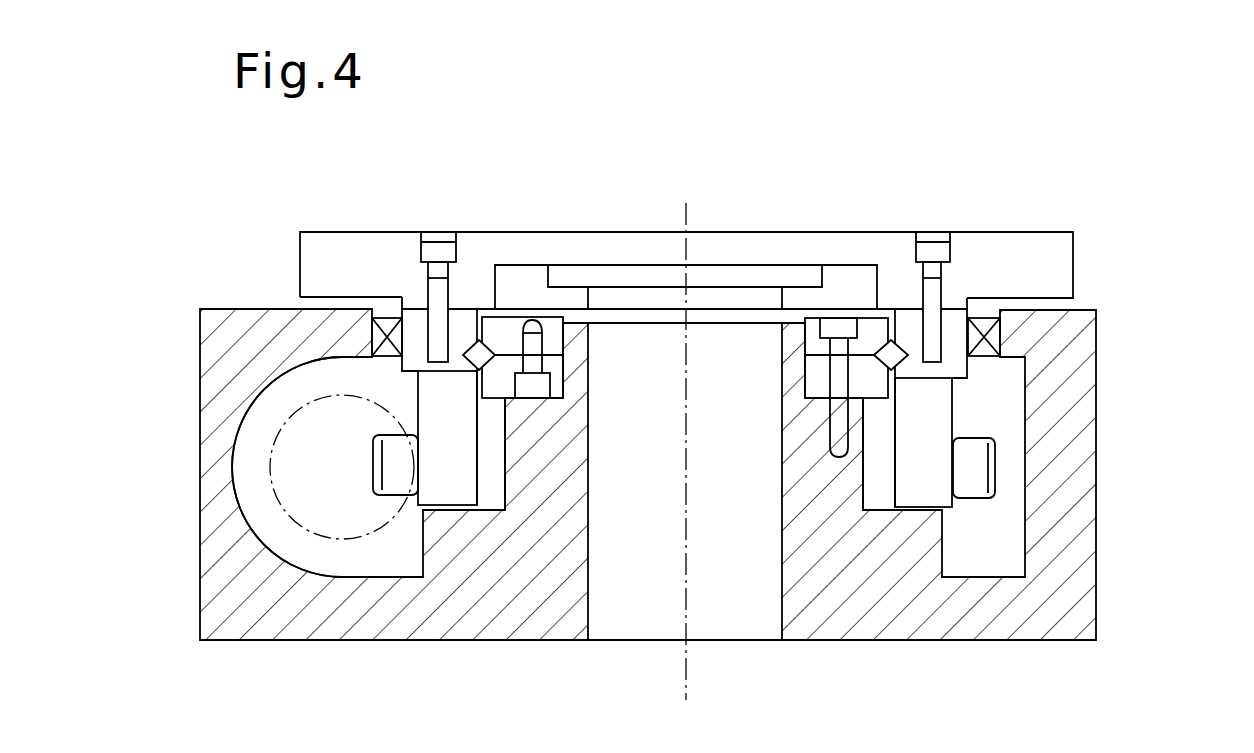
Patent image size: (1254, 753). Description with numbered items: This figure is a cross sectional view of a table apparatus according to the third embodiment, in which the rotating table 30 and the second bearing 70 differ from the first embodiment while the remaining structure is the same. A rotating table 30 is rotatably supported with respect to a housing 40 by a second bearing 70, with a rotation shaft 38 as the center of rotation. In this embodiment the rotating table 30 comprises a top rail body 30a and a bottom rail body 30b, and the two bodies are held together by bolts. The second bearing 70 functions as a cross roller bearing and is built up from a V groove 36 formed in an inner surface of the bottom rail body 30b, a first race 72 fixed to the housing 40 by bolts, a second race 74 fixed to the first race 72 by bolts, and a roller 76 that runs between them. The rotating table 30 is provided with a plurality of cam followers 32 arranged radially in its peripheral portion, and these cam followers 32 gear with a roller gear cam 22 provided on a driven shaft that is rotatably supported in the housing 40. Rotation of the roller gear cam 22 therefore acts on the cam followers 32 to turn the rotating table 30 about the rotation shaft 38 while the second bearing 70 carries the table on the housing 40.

The roller gear cam 22 is at (338, 523).
The rotating table 30 is at (769, 363).
The top rail body 30a is at (1058, 243).
The bottom rail body 30b is at (955, 315).
The cam followers 32 is at (978, 467).
The V groove 36 is at (470, 365).
The rotation shaft 38 is at (688, 213).
The housing 40 is at (1023, 628).
The second bearing 70 is at (795, 412).
The first race 72 is at (900, 372).
The second race 74 is at (872, 332).
The roller 76 is at (872, 387).